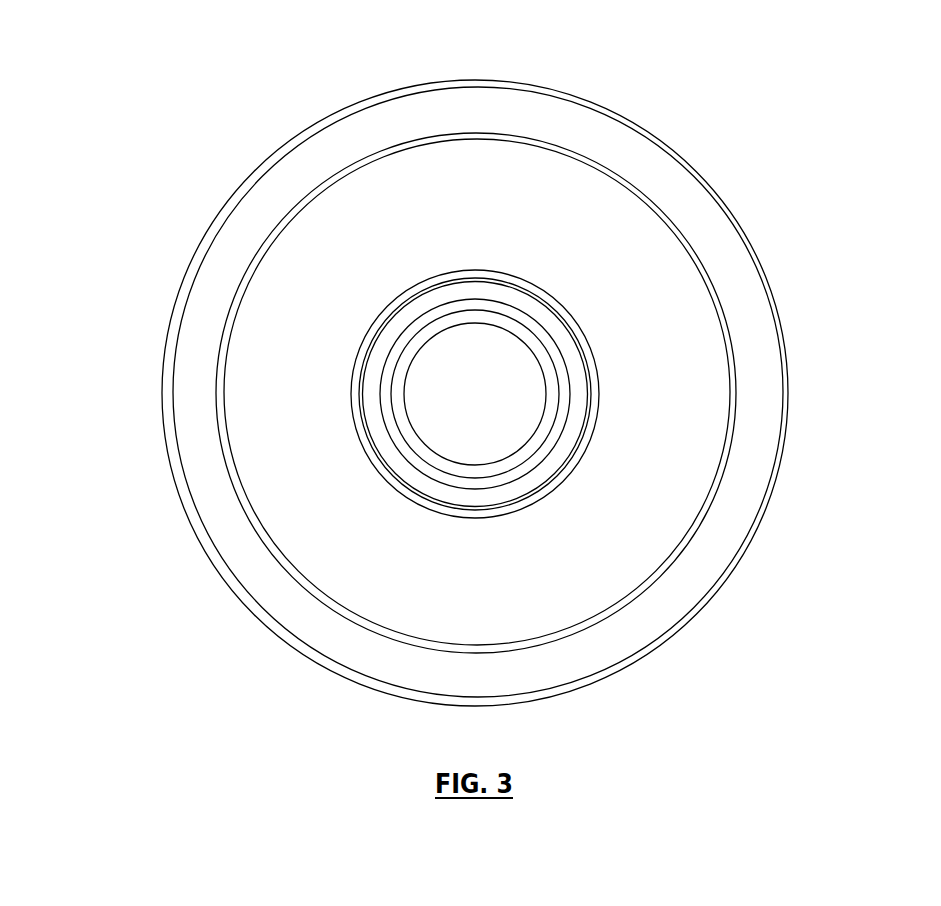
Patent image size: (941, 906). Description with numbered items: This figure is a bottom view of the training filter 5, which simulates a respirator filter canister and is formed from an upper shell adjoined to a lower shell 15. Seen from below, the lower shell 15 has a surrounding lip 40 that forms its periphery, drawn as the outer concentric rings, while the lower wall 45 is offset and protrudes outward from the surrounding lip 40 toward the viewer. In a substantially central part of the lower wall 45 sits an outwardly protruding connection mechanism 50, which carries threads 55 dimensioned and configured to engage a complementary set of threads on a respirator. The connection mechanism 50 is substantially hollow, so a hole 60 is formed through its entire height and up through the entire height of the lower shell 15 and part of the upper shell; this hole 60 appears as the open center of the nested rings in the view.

The training filter 5 is at (768, 105).
The lower shell 15 is at (777, 307).
The surrounding lip 40 is at (728, 258).
The lower wall 45 is at (557, 180).
The connection mechanism 50 is at (352, 447).
The threads 55 is at (552, 425).
The hole 60 is at (443, 382).